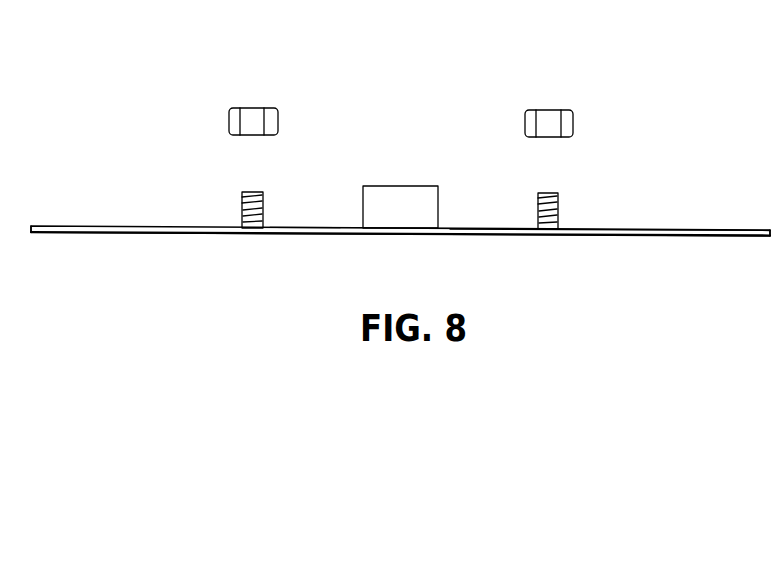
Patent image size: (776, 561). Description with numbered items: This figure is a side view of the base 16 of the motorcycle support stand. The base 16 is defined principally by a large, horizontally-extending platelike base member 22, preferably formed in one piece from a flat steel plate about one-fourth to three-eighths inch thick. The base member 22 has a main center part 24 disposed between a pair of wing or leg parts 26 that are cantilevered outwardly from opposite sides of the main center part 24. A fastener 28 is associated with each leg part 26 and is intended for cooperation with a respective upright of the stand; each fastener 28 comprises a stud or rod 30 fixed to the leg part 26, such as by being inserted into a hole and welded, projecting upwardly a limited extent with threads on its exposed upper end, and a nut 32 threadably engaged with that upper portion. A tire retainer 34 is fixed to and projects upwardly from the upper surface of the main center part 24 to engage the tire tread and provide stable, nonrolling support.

The base 16 is at (120, 239).
The base member 22 is at (636, 231).
The main center part 24 is at (318, 230).
The leg part 26 is at (144, 227).
The fastener 28 is at (601, 119).
The rod 30 is at (250, 206).
The nut 32 is at (262, 108).
The tire retainer 34 is at (403, 200).